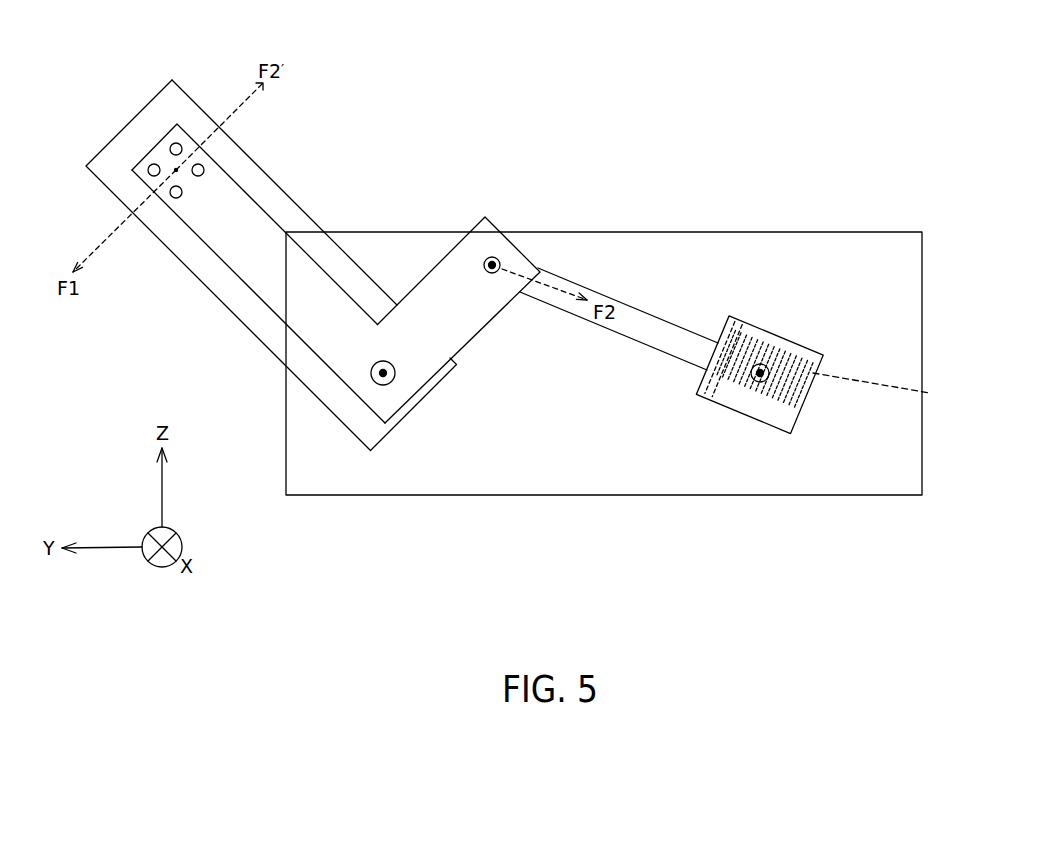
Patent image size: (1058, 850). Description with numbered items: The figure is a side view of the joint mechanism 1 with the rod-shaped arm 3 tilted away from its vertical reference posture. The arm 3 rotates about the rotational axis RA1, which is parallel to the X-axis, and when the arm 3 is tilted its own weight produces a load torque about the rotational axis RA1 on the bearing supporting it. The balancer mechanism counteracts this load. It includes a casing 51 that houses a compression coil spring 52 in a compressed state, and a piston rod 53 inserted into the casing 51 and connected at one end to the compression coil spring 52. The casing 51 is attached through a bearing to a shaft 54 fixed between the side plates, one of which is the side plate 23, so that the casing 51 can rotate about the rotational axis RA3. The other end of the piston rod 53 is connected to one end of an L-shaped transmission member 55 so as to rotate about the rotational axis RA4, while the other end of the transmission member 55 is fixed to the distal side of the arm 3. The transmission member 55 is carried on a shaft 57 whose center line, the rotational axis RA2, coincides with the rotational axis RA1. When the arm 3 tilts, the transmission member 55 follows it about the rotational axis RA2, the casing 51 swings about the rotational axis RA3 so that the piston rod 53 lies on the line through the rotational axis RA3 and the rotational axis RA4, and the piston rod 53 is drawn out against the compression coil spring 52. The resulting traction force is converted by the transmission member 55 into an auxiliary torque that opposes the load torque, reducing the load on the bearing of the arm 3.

The joint mechanism 1 is at (627, 162).
The arm 3 is at (128, 118).
The side plate 23 is at (907, 233).
The casing 51 is at (793, 357).
The compression coil spring 52 is at (887, 391).
The piston rod 53 is at (652, 338).
The shaft 54 is at (778, 380).
The transmission member 55 is at (247, 197).
The shaft 57 is at (427, 474).
The rotational axis RA1 is at (460, 456).
The rotational axis RA2 is at (395, 381).
The rotational axis RA3 is at (760, 362).
The rotational axis RA4 is at (493, 255).